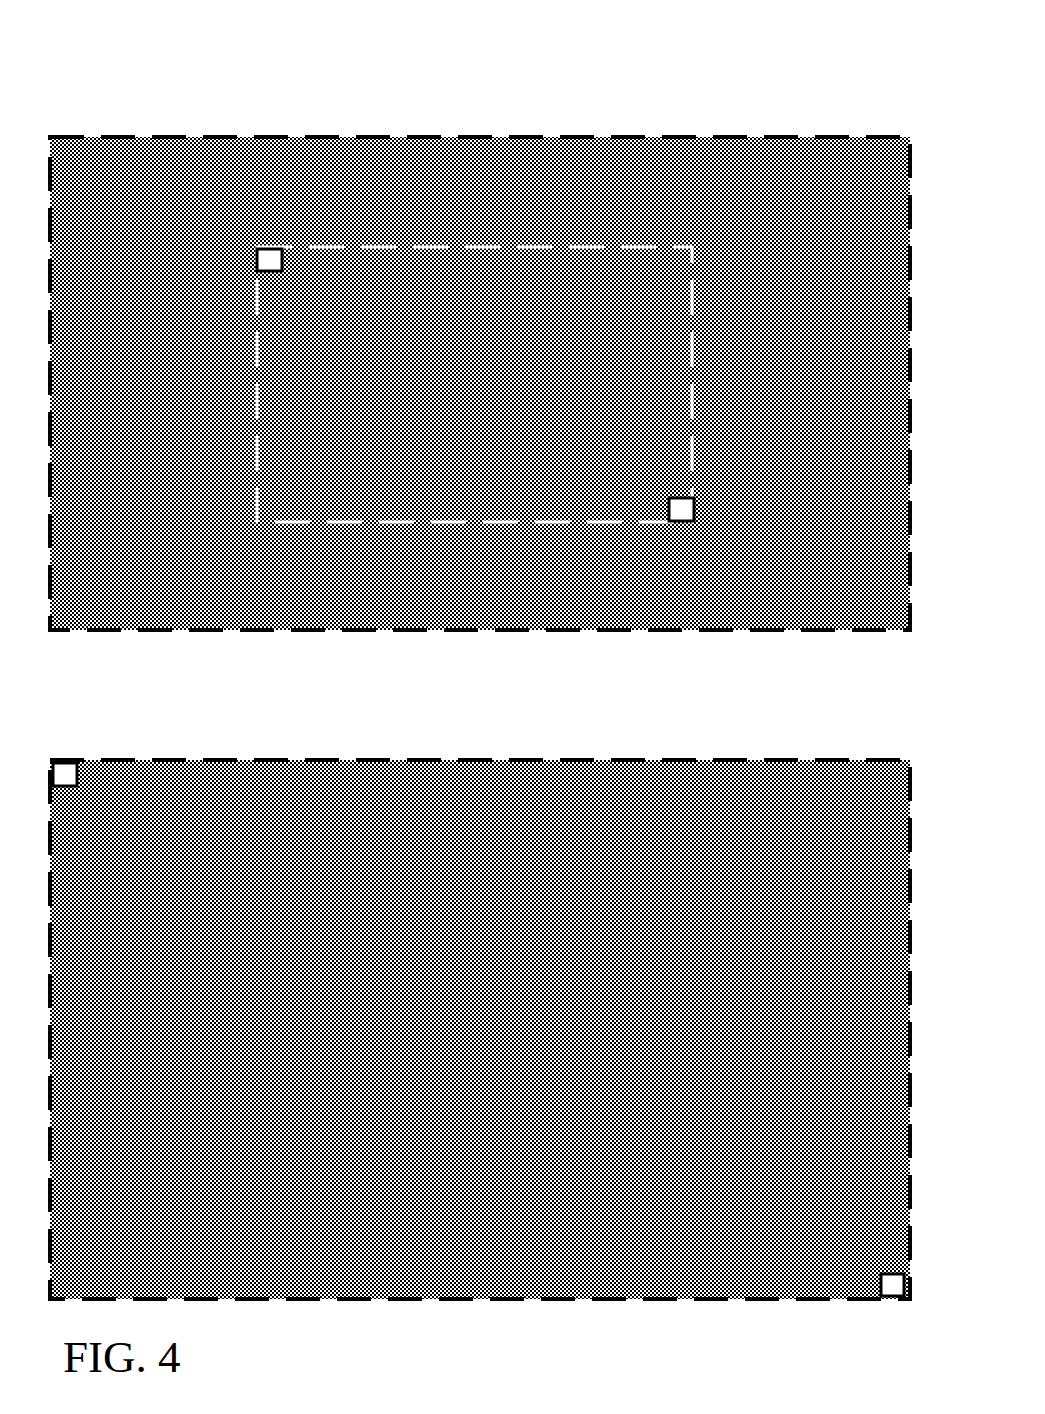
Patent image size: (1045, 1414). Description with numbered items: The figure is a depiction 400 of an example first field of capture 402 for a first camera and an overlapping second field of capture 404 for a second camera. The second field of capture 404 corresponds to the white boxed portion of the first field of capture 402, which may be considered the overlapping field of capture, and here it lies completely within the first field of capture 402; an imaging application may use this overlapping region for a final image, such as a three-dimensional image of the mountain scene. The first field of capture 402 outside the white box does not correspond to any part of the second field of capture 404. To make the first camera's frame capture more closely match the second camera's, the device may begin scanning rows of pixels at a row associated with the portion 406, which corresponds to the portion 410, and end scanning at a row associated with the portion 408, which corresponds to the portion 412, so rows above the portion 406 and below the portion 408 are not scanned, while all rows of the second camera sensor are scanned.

The depiction 400 is at (125, 52).
The first field of capture 402 is at (600, 138).
The second field of capture 404 is at (318, 1299).
The portion 406 is at (266, 248).
The portion 408 is at (679, 522).
The portion 410 is at (68, 760).
The portion 412 is at (892, 1299).